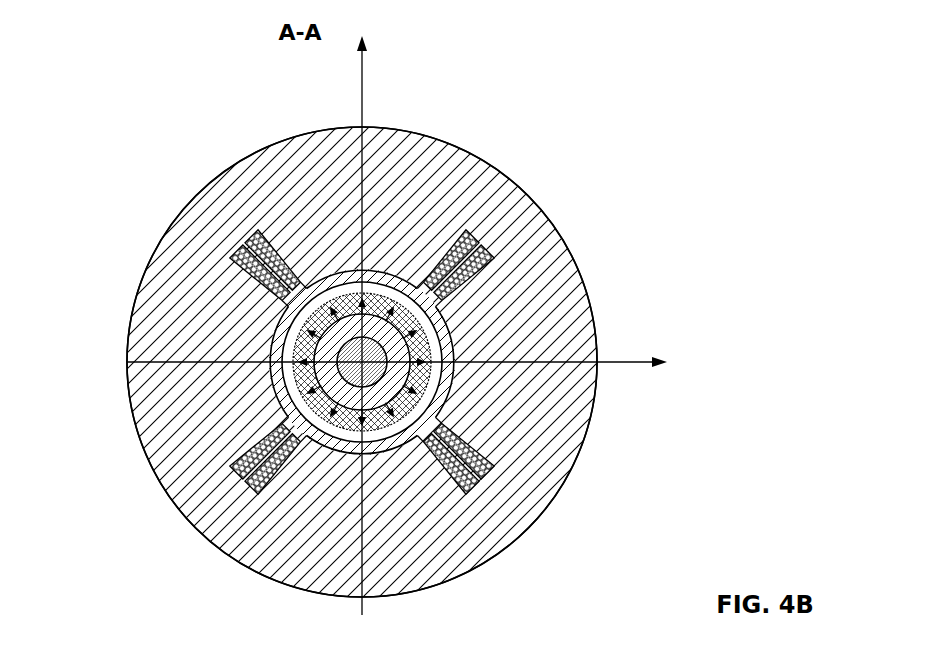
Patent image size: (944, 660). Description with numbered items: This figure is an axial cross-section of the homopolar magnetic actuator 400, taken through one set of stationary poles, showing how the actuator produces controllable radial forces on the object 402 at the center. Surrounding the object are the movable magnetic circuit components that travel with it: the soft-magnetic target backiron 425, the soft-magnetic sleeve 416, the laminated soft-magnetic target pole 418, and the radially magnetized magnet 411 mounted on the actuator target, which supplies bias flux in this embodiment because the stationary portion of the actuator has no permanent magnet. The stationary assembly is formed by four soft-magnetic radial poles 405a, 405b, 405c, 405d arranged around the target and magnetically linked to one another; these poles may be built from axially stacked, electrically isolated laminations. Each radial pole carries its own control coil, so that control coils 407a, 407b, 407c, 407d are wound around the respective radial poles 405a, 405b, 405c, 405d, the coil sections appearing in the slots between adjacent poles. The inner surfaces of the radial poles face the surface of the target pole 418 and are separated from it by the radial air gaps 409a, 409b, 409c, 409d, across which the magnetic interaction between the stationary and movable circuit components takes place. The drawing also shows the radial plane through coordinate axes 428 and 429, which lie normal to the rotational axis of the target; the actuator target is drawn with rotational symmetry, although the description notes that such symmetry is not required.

The magnetic actuator 400 is at (158, 72).
The object 402 is at (350, 367).
The radial pole 405a is at (306, 177).
The radial pole 405b is at (556, 262).
The radial pole 405c is at (383, 526).
The radial pole 405d is at (187, 295).
The control coil 407a is at (252, 236).
The control coil 407b is at (497, 243).
The control coil 407c is at (468, 495).
The control coil 407d is at (263, 277).
The radial air gap 409a is at (371, 272).
The radial air gap 409b is at (456, 372).
The radial air gap 409c is at (350, 456).
The radial air gap 409d is at (277, 327).
The radially magnetized magnet 411 is at (337, 267).
The soft-magnetic sleeve 416 is at (272, 343).
The soft-magnetic target pole 418 is at (300, 400).
The soft-magnetic target backiron 425 is at (441, 388).
The X axis 428 is at (640, 361).
The Y axis 429 is at (361, 80).